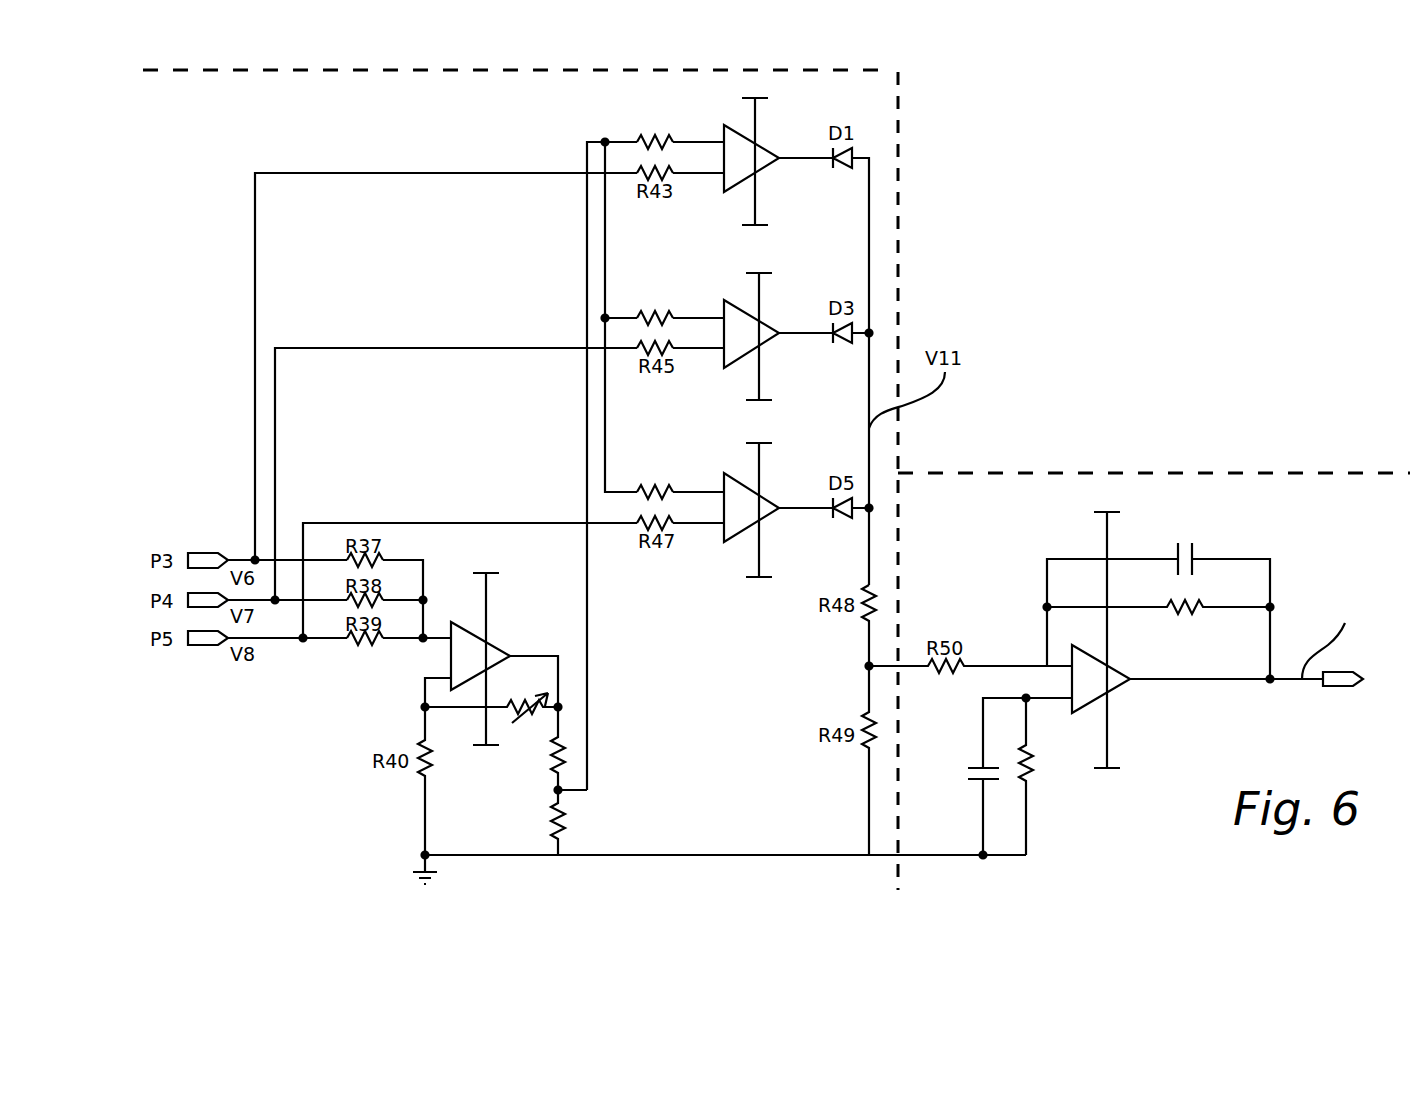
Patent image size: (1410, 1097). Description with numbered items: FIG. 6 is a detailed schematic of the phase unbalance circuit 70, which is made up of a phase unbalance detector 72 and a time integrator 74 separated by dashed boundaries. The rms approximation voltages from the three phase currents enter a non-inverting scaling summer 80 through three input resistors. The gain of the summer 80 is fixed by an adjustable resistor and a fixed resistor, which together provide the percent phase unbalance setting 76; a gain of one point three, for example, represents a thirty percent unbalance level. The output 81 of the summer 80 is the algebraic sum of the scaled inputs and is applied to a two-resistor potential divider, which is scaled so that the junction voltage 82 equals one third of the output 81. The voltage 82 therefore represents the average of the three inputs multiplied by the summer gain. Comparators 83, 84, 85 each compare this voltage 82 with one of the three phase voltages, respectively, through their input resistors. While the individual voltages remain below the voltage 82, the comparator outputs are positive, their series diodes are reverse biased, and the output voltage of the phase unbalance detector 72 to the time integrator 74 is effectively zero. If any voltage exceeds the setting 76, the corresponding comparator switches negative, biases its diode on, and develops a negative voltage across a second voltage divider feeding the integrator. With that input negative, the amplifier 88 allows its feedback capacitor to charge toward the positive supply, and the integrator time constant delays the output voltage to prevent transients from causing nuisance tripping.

The phase unbalance circuit 70 is at (1035, 302).
The phase unbalance detector 72 is at (885, 160).
The time integrator 74 is at (975, 500).
The percent phase unbalance setting 76 is at (560, 712).
The non-inverting scaling summer 80 is at (492, 647).
The output of summer 81 is at (535, 670).
The junction voltage 82 is at (600, 140).
The comparator 83 is at (757, 152).
The comparator 84 is at (761, 327).
The comparator 85 is at (761, 502).
The amplifier 88 is at (1109, 693).